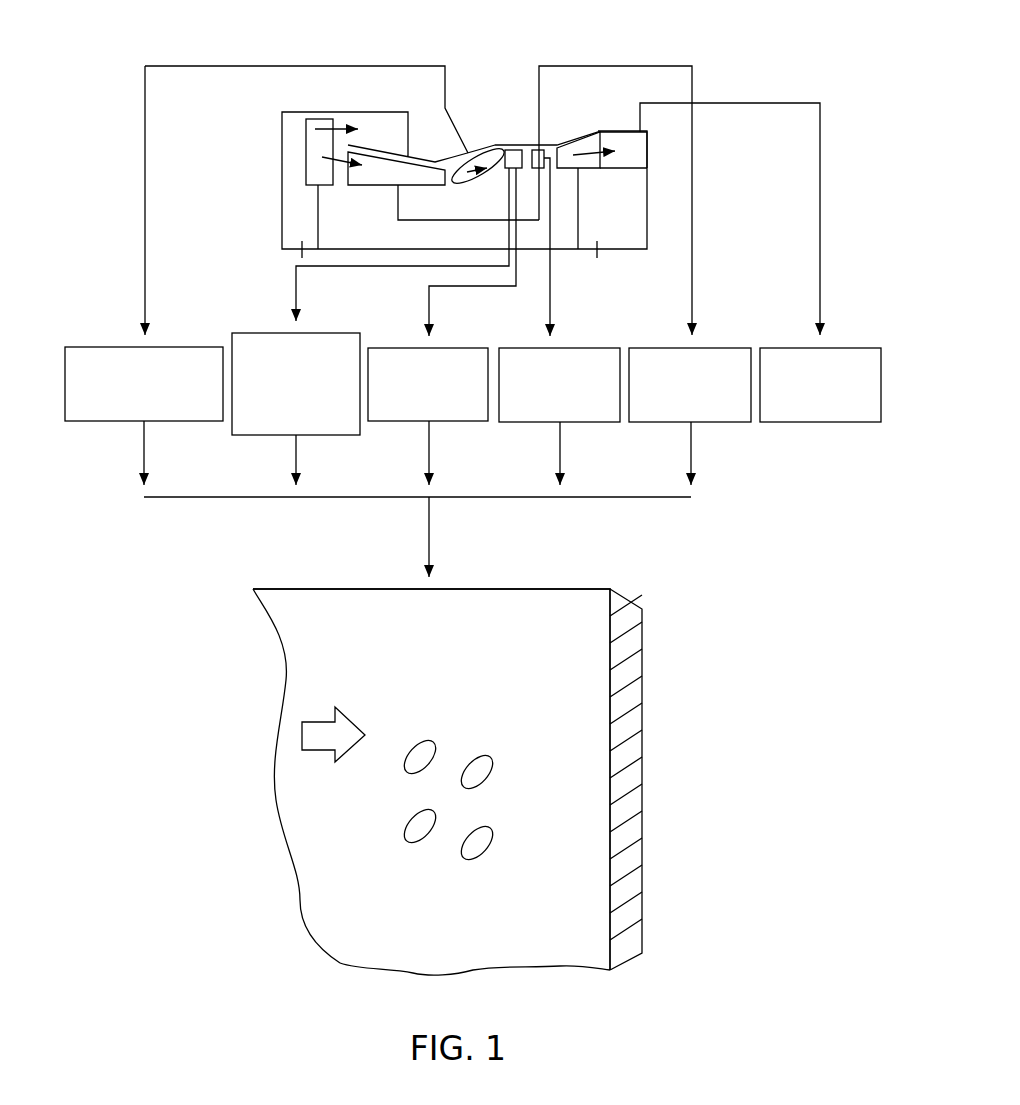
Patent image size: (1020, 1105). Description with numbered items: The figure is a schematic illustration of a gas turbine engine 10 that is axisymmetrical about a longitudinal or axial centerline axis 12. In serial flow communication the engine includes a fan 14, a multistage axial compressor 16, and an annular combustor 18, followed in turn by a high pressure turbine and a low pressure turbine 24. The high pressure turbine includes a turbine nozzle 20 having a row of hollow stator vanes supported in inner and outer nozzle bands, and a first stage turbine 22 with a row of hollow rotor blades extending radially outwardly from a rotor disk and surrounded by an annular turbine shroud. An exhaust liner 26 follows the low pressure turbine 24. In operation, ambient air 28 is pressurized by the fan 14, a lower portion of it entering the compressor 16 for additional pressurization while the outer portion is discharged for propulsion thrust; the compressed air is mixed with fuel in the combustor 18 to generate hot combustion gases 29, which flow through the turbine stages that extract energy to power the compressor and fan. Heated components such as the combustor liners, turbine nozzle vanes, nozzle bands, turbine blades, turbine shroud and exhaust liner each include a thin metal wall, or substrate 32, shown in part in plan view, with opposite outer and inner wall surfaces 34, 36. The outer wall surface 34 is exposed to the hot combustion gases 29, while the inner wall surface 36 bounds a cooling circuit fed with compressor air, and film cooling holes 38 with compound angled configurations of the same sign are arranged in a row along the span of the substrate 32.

The gas turbine engine 10 is at (195, 58).
The longitudinal or axial centerline axis 12 is at (400, 249).
The fan 14 is at (307, 143).
The multistage axial compressor 16 is at (388, 173).
The annular combustor 18 is at (480, 147).
The turbine nozzle 20 is at (513, 150).
The first stage turbine 22 is at (536, 148).
The low pressure turbine 24 is at (585, 170).
The exhaust liner 26 is at (606, 129).
The ambient air 28 is at (342, 120).
The hot combustion gases 29 is at (472, 174).
The substrate 32 is at (563, 588).
The outer wall surface 34 is at (568, 793).
The inner wall surface 36 is at (643, 735).
The film cooling hole 38 is at (477, 760).